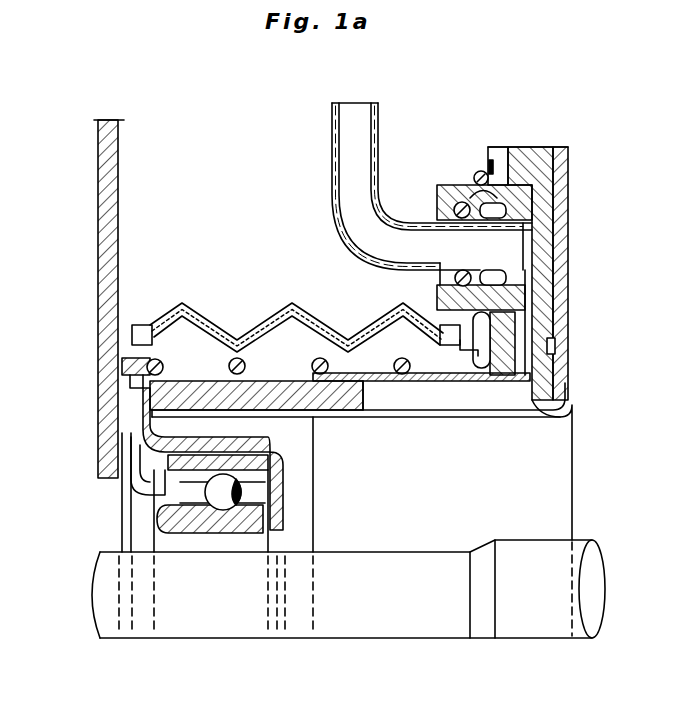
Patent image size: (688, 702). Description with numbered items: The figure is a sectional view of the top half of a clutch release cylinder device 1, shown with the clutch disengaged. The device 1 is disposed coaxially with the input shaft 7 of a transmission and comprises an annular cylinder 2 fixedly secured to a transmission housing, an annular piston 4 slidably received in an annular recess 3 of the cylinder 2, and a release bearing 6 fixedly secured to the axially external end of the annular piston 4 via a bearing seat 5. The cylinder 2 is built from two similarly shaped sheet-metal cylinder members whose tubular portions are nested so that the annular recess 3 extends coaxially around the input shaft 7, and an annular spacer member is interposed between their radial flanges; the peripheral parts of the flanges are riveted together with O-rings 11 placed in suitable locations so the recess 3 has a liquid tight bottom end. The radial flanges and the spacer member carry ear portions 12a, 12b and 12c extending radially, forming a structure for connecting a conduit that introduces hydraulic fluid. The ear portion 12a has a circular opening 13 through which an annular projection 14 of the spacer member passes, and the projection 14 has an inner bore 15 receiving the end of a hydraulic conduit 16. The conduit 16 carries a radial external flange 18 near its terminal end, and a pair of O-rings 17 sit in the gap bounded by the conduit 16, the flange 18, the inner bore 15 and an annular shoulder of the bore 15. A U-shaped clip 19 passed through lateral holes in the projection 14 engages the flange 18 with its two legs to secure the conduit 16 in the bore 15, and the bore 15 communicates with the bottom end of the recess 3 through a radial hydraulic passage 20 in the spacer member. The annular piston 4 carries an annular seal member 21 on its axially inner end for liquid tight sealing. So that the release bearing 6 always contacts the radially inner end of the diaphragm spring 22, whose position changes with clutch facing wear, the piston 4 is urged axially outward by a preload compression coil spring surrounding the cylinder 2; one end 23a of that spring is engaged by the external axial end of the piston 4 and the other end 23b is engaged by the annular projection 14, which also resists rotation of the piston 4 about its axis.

The clutch release cylinder device 1 is at (484, 75).
The annular cylinder 2 is at (376, 376).
The annular recess 3 is at (440, 420).
The annular piston 4 is at (300, 412).
The bearing seat 5 is at (140, 420).
The release bearing 6 is at (218, 490).
The input shaft 7 is at (95, 580).
The O-rings 11 is at (552, 346).
The ear portion 12a is at (492, 165).
The ear portion 12b is at (570, 172).
The ear portion 12c is at (536, 158).
The circular opening 13 is at (470, 182).
The annular projection 14 is at (432, 198).
The inner bore 15 is at (455, 234).
The hydraulic conduit 16 is at (380, 278).
The O-rings 17 is at (530, 292).
The external flange 18 is at (483, 395).
The U-shaped clip 19 is at (450, 279).
The radial hydraulic passage 20 is at (566, 406).
The annular seal member 21 is at (360, 410).
The diaphragm spring 22 is at (100, 250).
The end of the preload spring 23a is at (124, 363).
The other end of the preload spring 23b is at (476, 176).